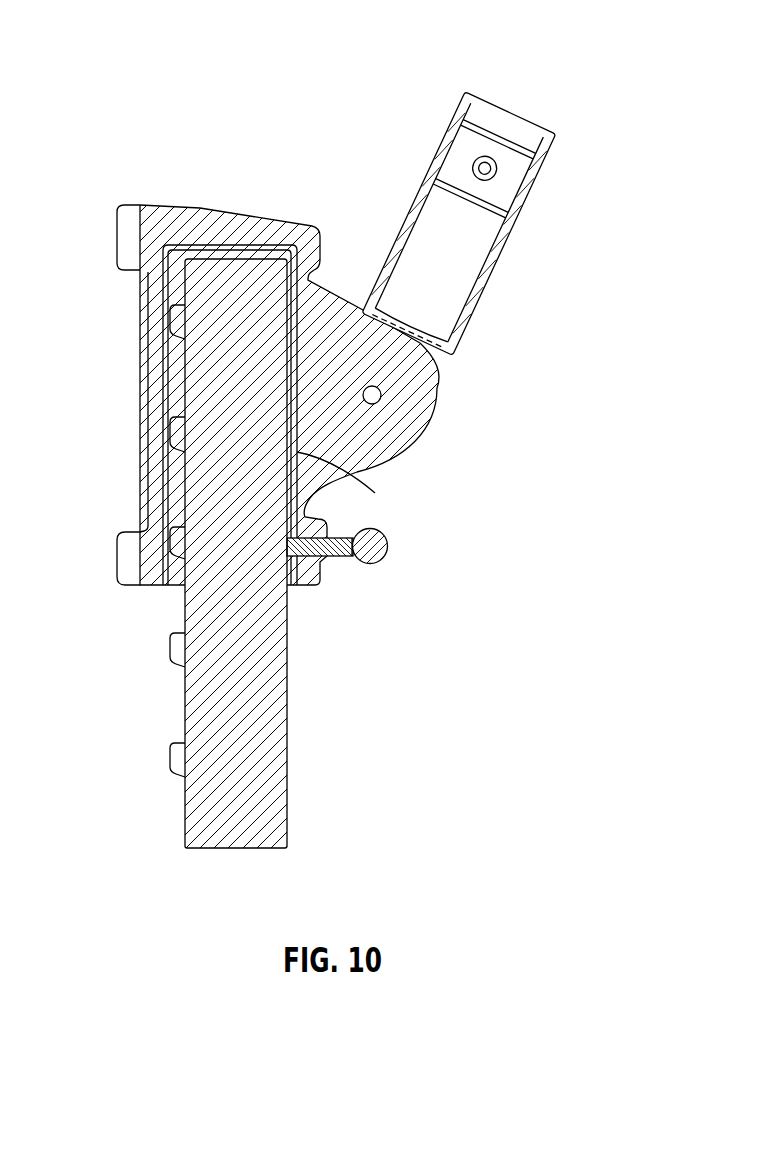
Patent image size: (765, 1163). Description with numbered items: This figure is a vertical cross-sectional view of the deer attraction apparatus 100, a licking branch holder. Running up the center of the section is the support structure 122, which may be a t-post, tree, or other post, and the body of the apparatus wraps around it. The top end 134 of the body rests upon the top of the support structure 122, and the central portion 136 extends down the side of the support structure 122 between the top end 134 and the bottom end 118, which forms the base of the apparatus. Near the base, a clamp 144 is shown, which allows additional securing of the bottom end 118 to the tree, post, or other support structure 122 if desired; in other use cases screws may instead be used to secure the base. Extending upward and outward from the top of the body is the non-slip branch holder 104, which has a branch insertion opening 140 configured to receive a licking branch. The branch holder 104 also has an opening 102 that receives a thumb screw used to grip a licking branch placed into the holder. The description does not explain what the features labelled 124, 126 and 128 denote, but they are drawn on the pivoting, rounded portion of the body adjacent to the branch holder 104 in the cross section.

The deer attraction apparatus 100 is at (120, 43).
The opening 102 is at (560, 147).
The non-slip branch holder 104 is at (497, 243).
The bottom end 118 is at (117, 560).
The support structure 122 is at (185, 698).
The housing wall 124 is at (297, 452).
The lobe 126 is at (440, 398).
The pivot hole 128 is at (382, 398).
The top end 134 is at (228, 208).
The central portion 136 is at (140, 395).
The branch insertion opening 140 is at (503, 127).
The clamp 144 is at (330, 562).